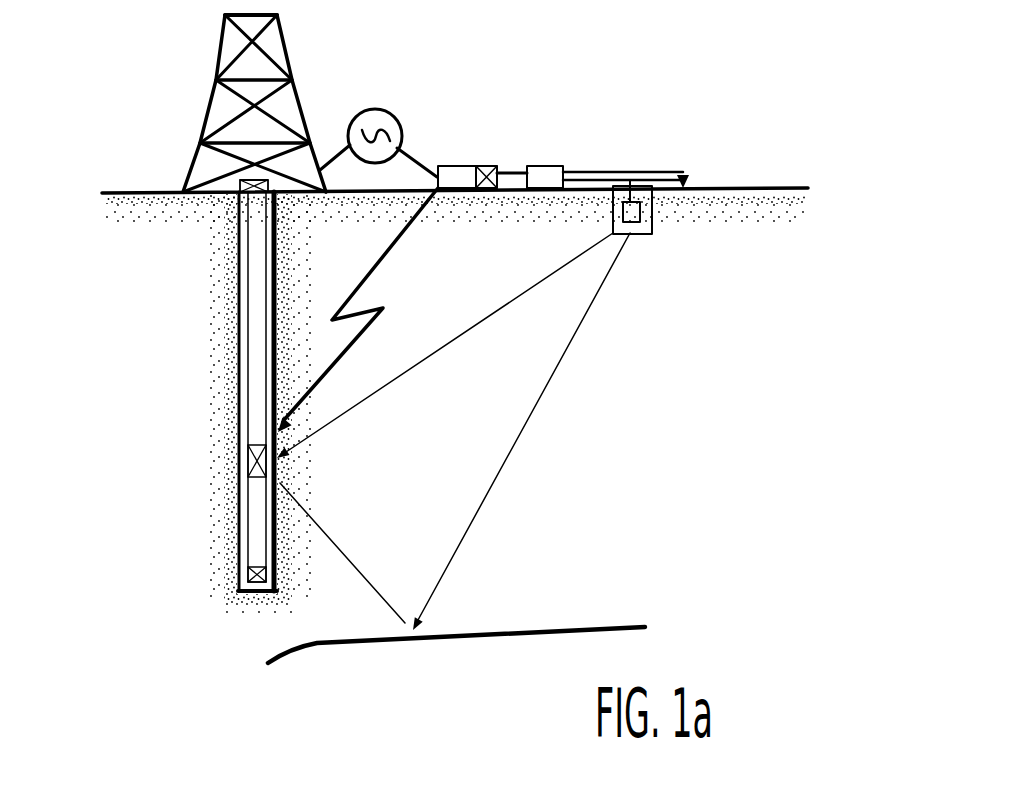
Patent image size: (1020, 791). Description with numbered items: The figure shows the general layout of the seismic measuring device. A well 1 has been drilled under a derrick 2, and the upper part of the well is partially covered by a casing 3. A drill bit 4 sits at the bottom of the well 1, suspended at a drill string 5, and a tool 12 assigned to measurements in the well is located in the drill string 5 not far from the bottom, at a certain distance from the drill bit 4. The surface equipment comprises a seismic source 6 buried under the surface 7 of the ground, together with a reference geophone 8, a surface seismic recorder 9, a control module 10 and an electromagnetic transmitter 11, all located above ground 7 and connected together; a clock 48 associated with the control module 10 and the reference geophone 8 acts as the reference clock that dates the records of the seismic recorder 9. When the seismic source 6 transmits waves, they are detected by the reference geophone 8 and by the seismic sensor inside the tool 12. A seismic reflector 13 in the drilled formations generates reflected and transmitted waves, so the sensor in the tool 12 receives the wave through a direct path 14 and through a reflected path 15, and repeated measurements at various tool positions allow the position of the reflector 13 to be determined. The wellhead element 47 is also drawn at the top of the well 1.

The well 1 is at (230, 299).
The derrick 2 is at (217, 50).
The casing 3 is at (238, 352).
The drill bit 4 is at (250, 572).
The drill string 5 is at (257, 415).
The seismic source 6 is at (664, 228).
The surface of the ground 7 is at (783, 188).
The reference geophone 8 is at (688, 180).
The surface seismic recorder 9 is at (548, 166).
The control module 10 is at (456, 175).
The electromagnetic transmitter 11 is at (379, 109).
The tool 12 is at (256, 460).
The seismic reflector 13 is at (572, 627).
The direct path 14 is at (484, 328).
The reflected path 15 is at (550, 383).
The wellhead 47 is at (222, 185).
The clock 48 is at (488, 166).